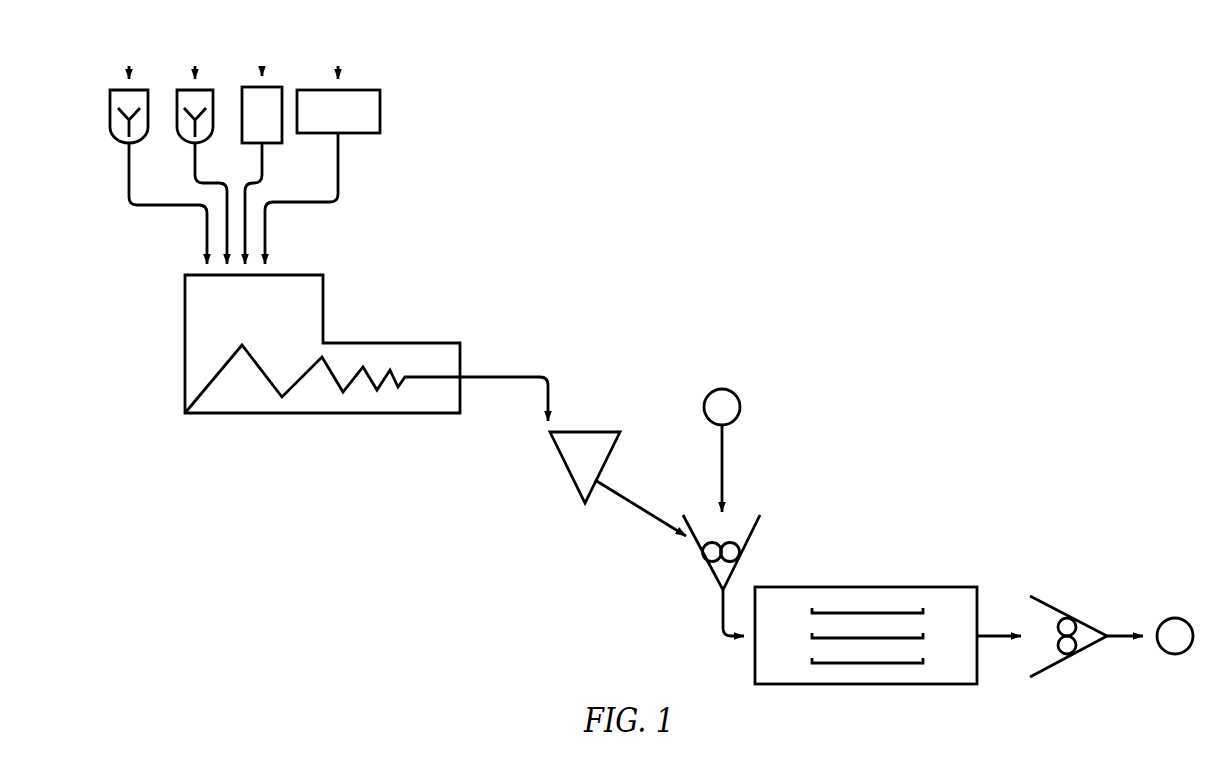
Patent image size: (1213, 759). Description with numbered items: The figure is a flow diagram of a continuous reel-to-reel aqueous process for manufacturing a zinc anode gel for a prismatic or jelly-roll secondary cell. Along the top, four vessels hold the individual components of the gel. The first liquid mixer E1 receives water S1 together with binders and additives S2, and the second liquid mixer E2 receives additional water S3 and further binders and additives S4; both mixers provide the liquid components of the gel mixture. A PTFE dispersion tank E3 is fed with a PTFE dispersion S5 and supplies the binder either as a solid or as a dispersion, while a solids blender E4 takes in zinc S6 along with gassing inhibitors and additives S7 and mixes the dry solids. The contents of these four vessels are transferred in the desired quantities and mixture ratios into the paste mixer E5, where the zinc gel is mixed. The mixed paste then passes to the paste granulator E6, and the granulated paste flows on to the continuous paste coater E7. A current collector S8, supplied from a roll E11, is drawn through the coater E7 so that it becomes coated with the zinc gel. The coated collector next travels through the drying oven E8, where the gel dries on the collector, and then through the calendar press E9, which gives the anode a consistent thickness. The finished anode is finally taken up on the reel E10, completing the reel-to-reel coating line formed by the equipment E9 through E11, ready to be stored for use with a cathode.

The liquid mixer E1 is at (110, 108).
The liquid mixer E2 is at (177, 114).
The PTFE dispersion tank E3 is at (242, 112).
The solids blender E4 is at (383, 107).
The paste mixer E5 is at (185, 335).
The paste granulator E6 is at (590, 432).
The continuous paste coater E7 is at (698, 550).
The drying oven E8 is at (873, 684).
The calendar press E9 is at (1067, 658).
The reel-to-reel coating vessel E10 is at (1162, 623).
The reel-to-reel coating vessel E11 is at (713, 394).
The water S1 is at (127, 63).
The binders and additives S2 is at (127, 63).
The water S3 is at (197, 63).
The binders and additives S4 is at (197, 63).
The PTFE dispersion S5 is at (262, 61).
The zinc S6 is at (338, 63).
The gassing inhibitors and additives S7 is at (338, 63).
The current collector S8 is at (727, 458).